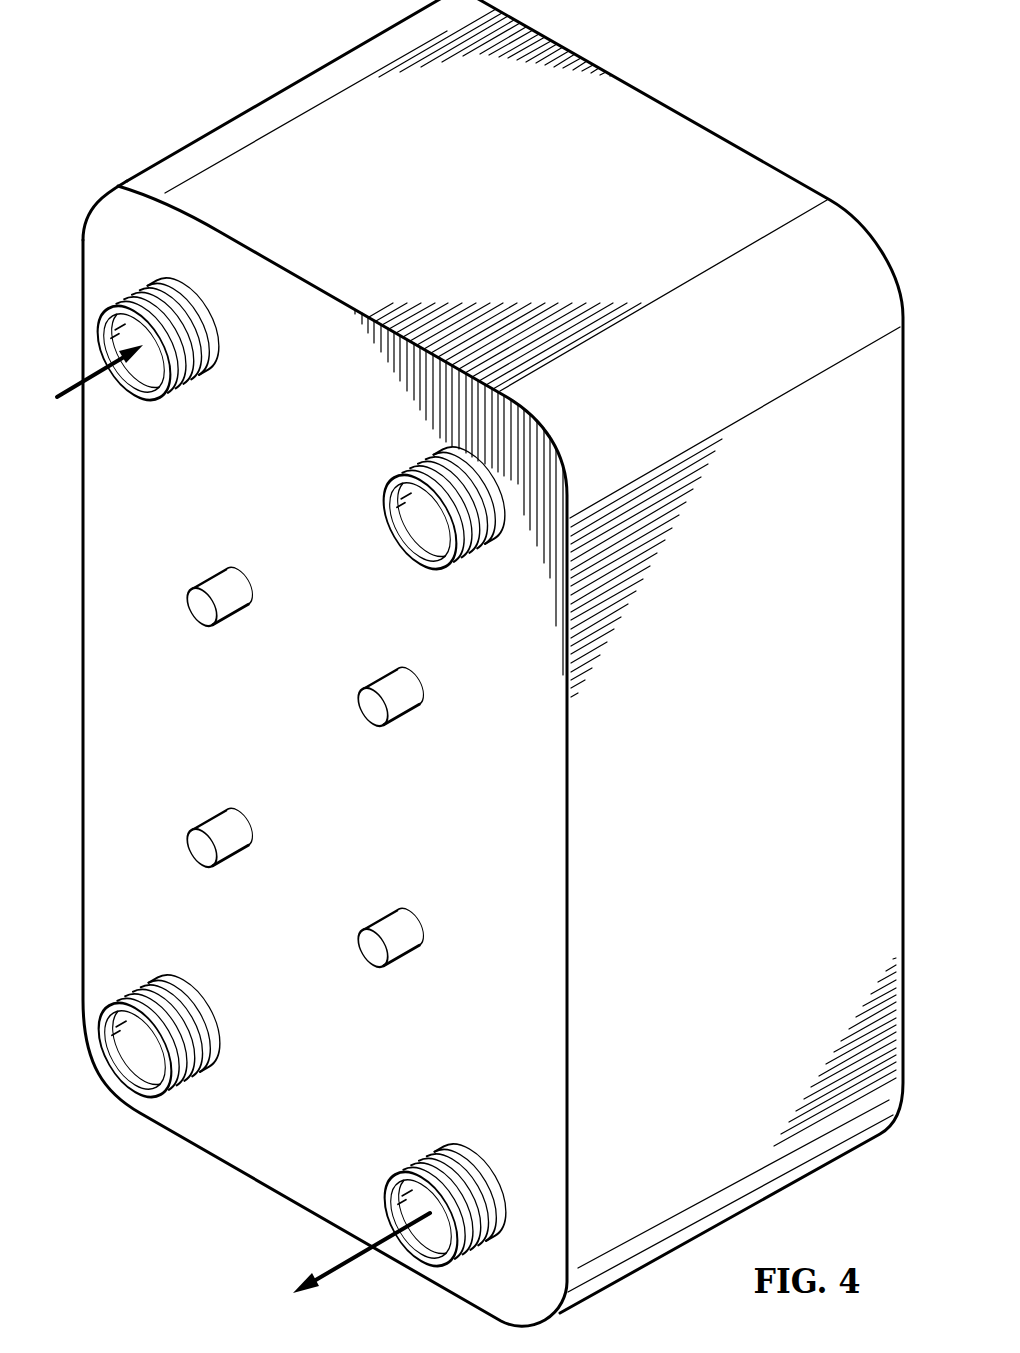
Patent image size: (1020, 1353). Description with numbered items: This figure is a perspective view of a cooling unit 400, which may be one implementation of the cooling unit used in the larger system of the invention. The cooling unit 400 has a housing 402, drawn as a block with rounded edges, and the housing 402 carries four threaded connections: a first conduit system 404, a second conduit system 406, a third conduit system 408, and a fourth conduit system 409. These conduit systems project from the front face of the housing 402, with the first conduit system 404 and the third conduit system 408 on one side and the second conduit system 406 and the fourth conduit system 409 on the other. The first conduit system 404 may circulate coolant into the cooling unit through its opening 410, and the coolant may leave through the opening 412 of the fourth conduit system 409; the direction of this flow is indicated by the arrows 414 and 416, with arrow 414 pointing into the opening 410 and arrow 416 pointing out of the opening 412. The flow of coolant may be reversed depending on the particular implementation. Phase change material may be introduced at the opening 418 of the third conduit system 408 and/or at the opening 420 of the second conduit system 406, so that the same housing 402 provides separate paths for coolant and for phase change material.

The cooling unit 400 is at (696, 66).
The housing 402 is at (262, 92).
The first conduit system 404 is at (191, 383).
The second conduit system 406 is at (476, 553).
The third conduit system 408 is at (193, 1083).
The fourth conduit system 409 is at (481, 1243).
The opening 410 is at (140, 384).
The opening 412 is at (423, 1248).
The arrow 414 is at (63, 387).
The arrow 416 is at (330, 1267).
The opening 418 is at (140, 1085).
The opening 420 is at (425, 556).